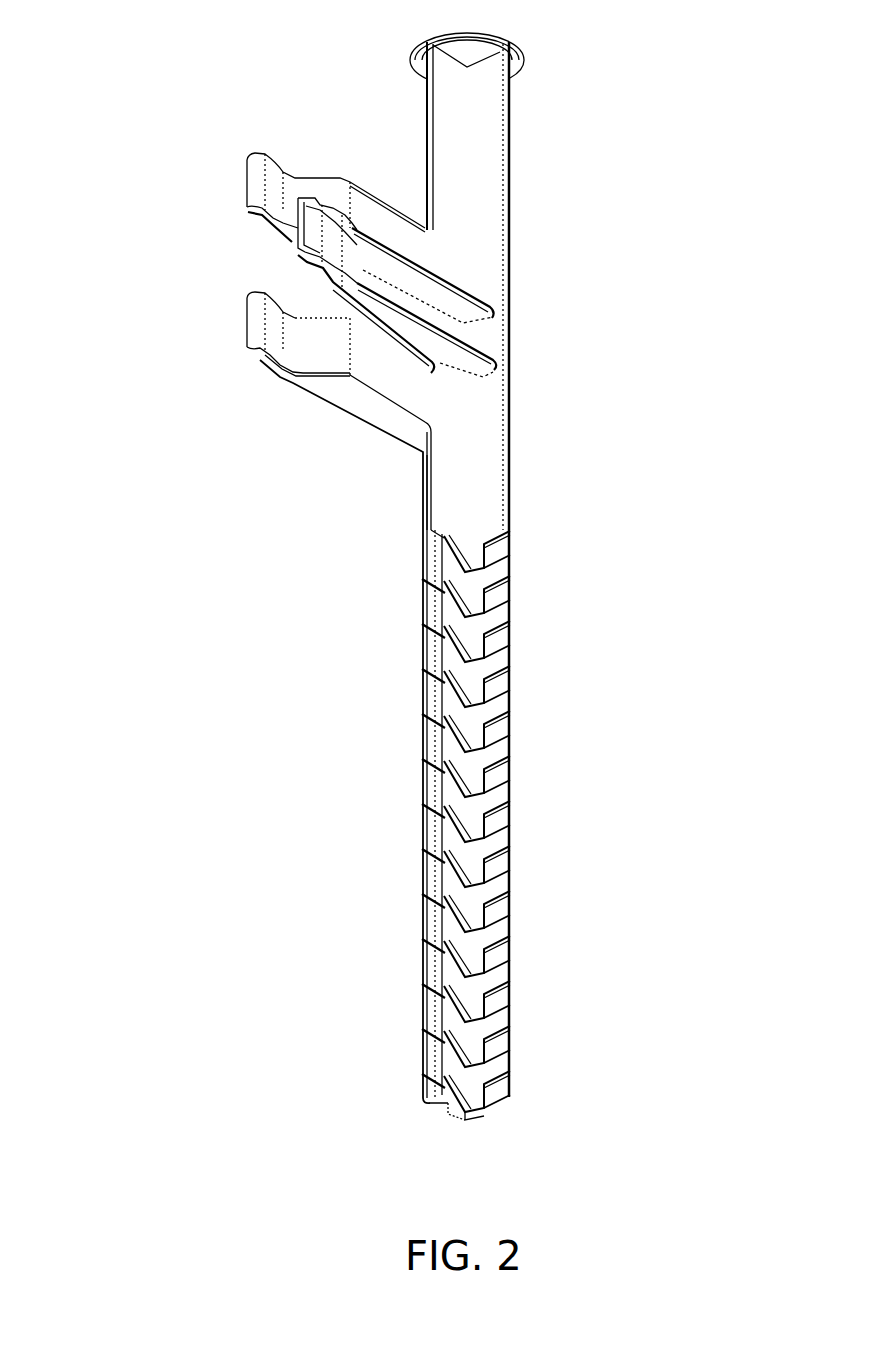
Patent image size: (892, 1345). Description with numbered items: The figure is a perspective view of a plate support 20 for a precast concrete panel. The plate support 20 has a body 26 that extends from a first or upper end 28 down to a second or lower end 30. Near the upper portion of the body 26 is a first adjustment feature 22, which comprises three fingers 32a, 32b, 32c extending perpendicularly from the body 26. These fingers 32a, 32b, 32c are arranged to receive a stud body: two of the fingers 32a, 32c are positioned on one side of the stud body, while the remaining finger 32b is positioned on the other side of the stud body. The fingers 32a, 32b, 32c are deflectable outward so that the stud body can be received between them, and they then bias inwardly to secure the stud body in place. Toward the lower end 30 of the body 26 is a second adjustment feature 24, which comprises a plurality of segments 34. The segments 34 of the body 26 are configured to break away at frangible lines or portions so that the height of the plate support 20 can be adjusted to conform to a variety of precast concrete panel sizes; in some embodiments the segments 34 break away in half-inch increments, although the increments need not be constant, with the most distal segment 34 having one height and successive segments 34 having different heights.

The plate support 20 is at (668, 144).
The first adjustment feature 22 is at (237, 99).
The second adjustment feature 24 is at (617, 803).
The body 26 is at (483, 467).
The first or upper end 28 is at (482, 63).
The second or lower end 30 is at (480, 1113).
The finger 32a is at (260, 189).
The finger 32b is at (320, 262).
The finger 32c is at (260, 328).
The segments 34 is at (493, 985).